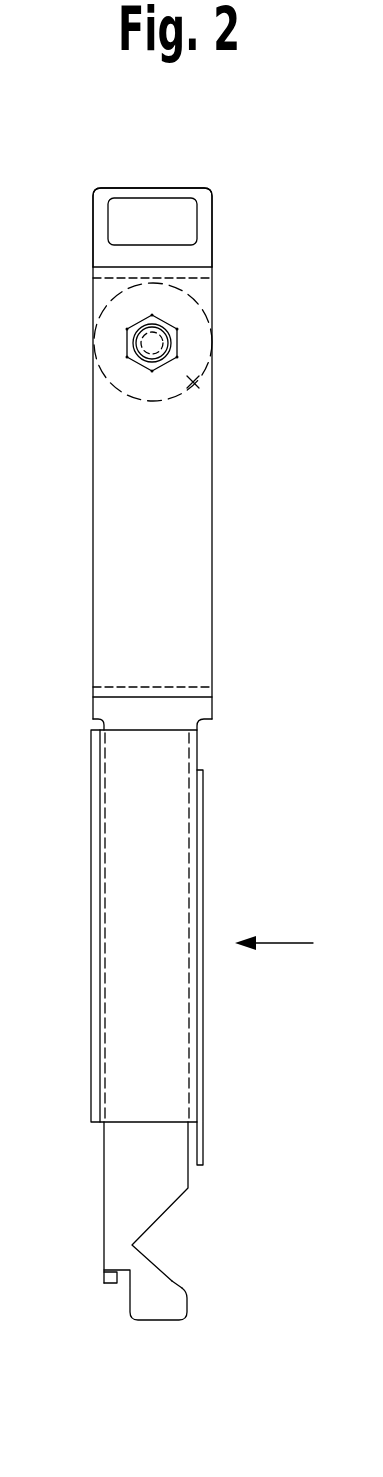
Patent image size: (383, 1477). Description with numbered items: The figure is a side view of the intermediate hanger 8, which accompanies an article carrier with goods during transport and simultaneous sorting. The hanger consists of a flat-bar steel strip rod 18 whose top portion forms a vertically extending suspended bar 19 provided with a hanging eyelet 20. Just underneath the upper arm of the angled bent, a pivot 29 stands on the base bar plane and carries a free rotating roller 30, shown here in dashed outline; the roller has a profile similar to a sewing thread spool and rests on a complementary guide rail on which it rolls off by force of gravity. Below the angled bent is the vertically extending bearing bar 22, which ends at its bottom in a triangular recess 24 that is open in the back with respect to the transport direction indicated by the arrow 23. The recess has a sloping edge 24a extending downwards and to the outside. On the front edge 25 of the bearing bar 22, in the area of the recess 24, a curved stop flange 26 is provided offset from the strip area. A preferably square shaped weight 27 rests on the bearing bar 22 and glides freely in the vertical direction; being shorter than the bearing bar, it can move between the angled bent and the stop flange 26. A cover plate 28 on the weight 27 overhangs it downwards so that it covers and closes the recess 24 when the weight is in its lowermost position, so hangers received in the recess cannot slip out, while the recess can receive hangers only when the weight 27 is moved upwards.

The intermediate hanger 8 is at (258, 226).
The flat-bar steel strip rod 18 is at (220, 543).
The suspended bar 19 is at (200, 196).
The hanging eyelet 20 is at (133, 220).
The bearing bar 22 is at (127, 1155).
The arrow indicating transport direction 23 is at (284, 942).
The triangular recess 24 is at (180, 1240).
The sloping edge 24a is at (174, 1283).
The front edge 25 is at (103, 1231).
The stop flange 26 is at (106, 1285).
The weight 27 is at (118, 877).
The cover plate 28 is at (198, 1063).
The pivot 29 is at (162, 331).
The roller 30 is at (196, 386).